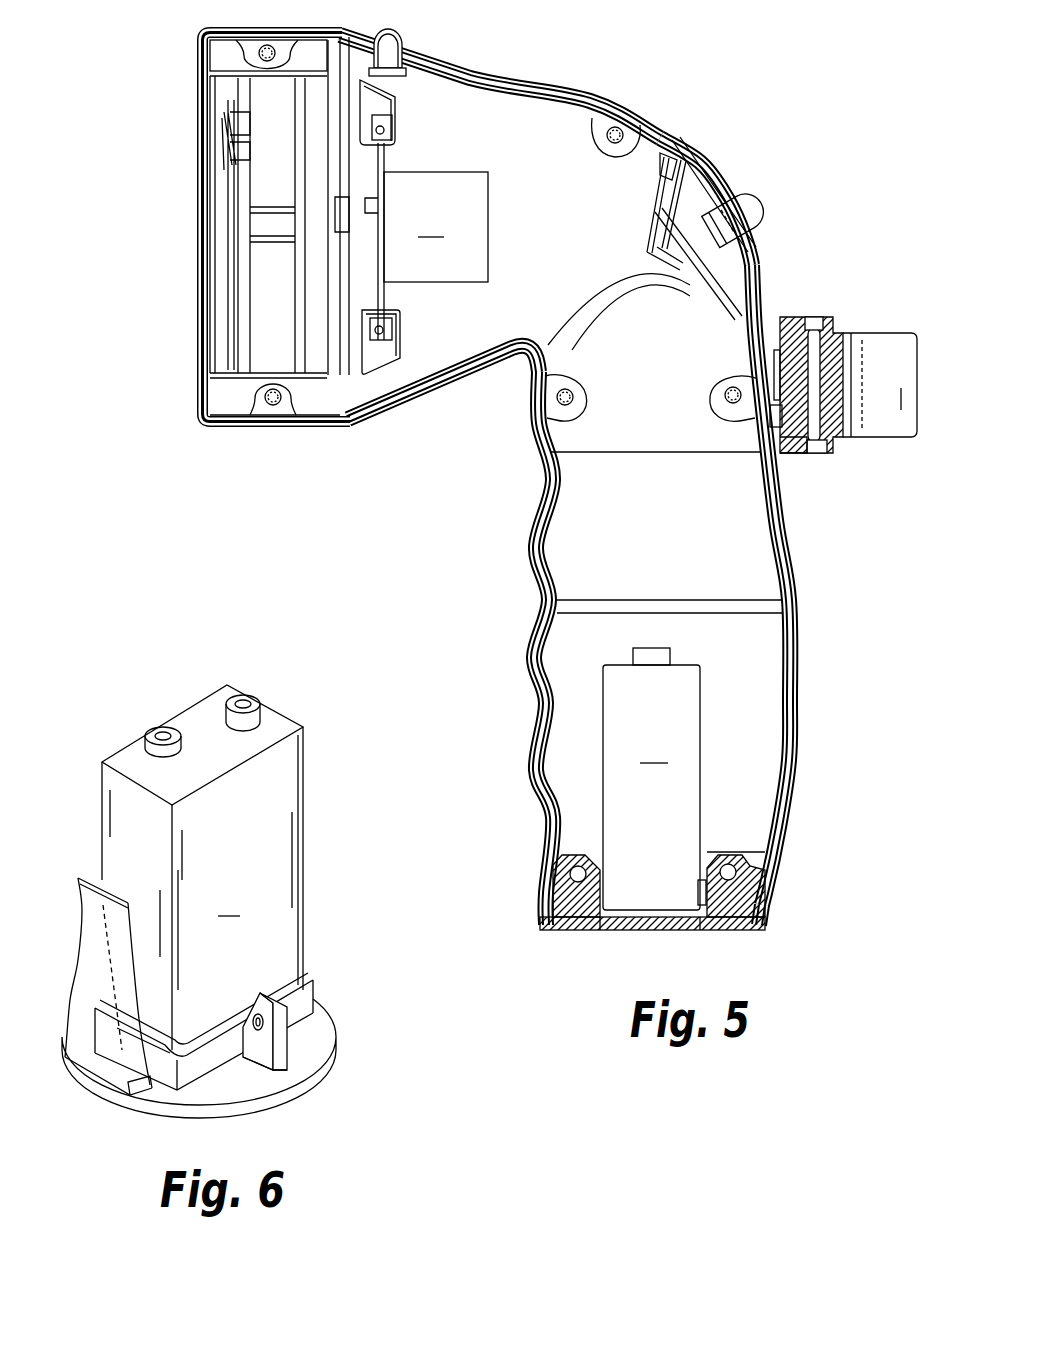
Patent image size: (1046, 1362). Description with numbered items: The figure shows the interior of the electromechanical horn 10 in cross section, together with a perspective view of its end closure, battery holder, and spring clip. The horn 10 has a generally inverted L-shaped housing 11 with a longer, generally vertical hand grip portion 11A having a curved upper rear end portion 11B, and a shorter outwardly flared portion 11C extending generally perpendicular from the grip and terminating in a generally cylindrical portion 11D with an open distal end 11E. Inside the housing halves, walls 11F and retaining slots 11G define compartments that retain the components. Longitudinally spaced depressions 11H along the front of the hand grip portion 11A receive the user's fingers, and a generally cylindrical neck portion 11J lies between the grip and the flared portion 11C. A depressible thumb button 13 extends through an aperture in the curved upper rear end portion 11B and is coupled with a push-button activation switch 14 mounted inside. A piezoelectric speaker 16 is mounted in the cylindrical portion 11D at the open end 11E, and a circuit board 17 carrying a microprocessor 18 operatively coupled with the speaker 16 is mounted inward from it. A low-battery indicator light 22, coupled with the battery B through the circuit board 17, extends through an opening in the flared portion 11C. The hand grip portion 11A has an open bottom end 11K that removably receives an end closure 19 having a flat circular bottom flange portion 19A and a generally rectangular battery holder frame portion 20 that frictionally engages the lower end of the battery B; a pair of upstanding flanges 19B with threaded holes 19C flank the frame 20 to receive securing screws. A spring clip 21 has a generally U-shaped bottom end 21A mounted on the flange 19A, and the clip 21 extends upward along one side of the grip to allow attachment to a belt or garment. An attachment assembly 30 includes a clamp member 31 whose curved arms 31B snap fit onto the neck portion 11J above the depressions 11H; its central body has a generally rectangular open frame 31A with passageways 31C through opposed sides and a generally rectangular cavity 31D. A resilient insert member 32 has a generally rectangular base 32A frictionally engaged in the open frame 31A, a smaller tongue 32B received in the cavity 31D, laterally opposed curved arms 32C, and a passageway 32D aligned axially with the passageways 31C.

In FIG. 5, the horn 10 is at (705, 48).
In FIG. 5, the housing 11 is at (790, 553).
In FIG. 5, the hand grip portion 11A is at (800, 640).
In FIG. 5, the curved upper rear end portion 11B is at (685, 140).
In FIG. 5, the outwardly flared portion 11C is at (500, 78).
In FIG. 5, the generally cylindrical portion 11D is at (268, 430).
In FIG. 5, the open distal end 11E is at (200, 92).
In FIG. 5, the walls 11F is at (397, 108).
In FIG. 5, the retaining slots 11G is at (392, 130).
In FIG. 5, the longitudinally spaced depressions 11H is at (536, 495).
In FIG. 5, the generally cylindrical neck portion 11J is at (530, 405).
In FIG. 5, the open bottom end 11K is at (772, 920).
In FIG. 5, the depressible thumb button 13 is at (765, 205).
In FIG. 5, the push-button activation switch 14 is at (705, 222).
In FIG. 5, the piezoelectric speaker 16 is at (240, 200).
In FIG. 5, the circuit board 17 is at (388, 162).
In FIG. 5, the microprocessor (microcontroller) 18 is at (436, 227).
In FIG. 5, the end closure 19 is at (651, 890).
In FIG. 6, the end closure 19 is at (220, 1061).
In FIG. 5, the flat circular bottom flange portion 19A is at (548, 920).
In FIG. 6, the flat circular bottom flange portion 19A is at (252, 1115).
In FIG. 5, the upstanding flanges 19B is at (560, 880).
In FIG. 6, the upstanding flanges 19B is at (290, 1058).
In FIG. 5, the threaded hole 19C is at (583, 866).
In FIG. 6, the threaded hole 19C is at (253, 1020).
In FIG. 5, the battery holder frame portion 20 is at (700, 895).
In FIG. 6, the battery holder frame portion 20 is at (300, 1002).
In FIG. 6, the spring clip 21 is at (116, 1013).
In FIG. 6, the U-shaped bottom end 21A is at (145, 1098).
In FIG. 5, the low-battery indicator light 22 is at (392, 42).
In FIG. 5, the attachment assembly 30 is at (812, 283).
In FIG. 5, the clamp member 31 is at (789, 390).
In FIG. 5, the generally rectangular open frame 31A is at (795, 455).
In FIG. 5, the curved arms 31B is at (530, 432).
In FIG. 5, the passageways 31C is at (810, 315).
In FIG. 5, the generally rectangular cavity 31D is at (787, 400).
In FIG. 5, the insert member 32 is at (881, 384).
In FIG. 5, the generally rectangular base 32A is at (847, 413).
In FIG. 5, the generally rectangular tongue 32B is at (787, 370).
In FIG. 5, the curved arms 32C is at (868, 428).
In FIG. 5, the passageway 32D is at (820, 372).
In FIG. 5, the battery B is at (651, 779).
In FIG. 6, the battery B is at (202, 867).